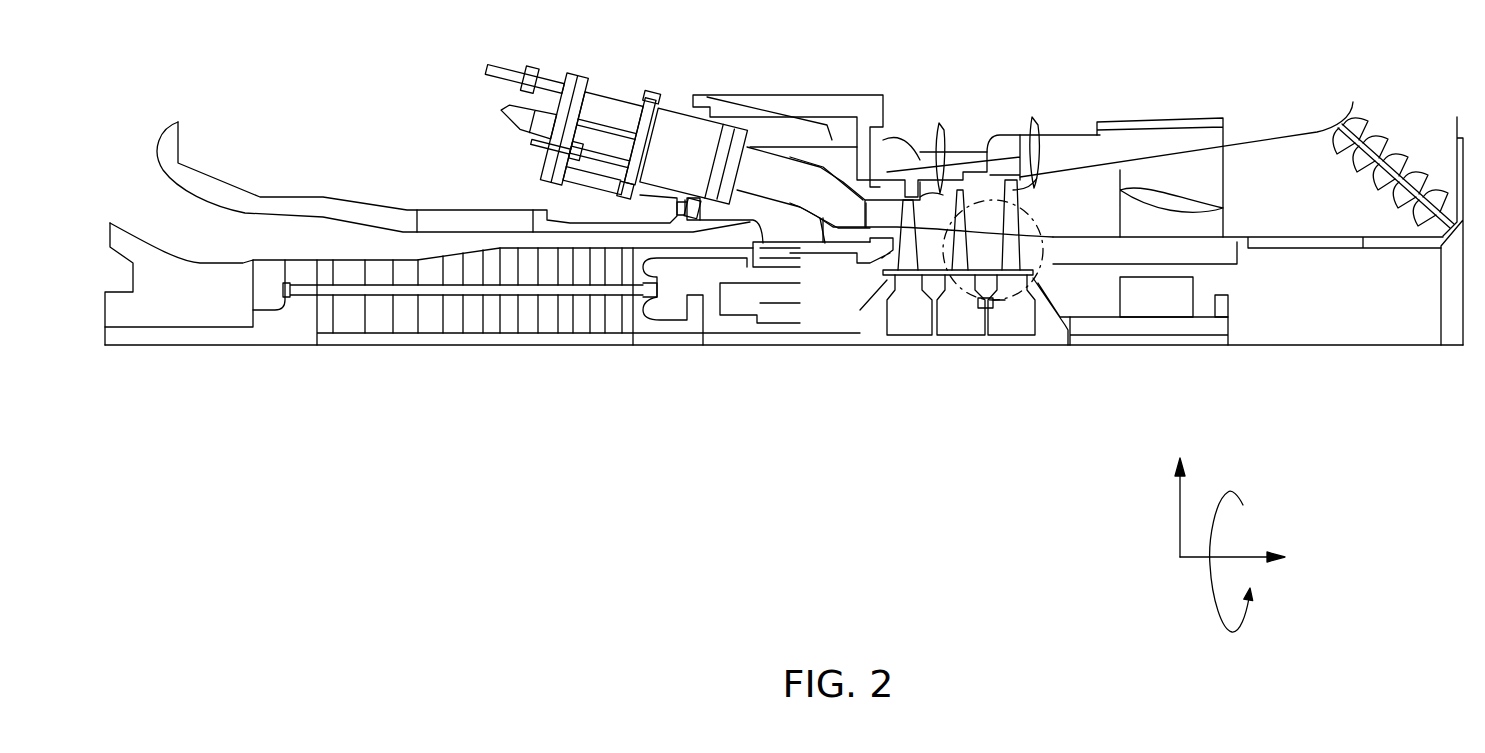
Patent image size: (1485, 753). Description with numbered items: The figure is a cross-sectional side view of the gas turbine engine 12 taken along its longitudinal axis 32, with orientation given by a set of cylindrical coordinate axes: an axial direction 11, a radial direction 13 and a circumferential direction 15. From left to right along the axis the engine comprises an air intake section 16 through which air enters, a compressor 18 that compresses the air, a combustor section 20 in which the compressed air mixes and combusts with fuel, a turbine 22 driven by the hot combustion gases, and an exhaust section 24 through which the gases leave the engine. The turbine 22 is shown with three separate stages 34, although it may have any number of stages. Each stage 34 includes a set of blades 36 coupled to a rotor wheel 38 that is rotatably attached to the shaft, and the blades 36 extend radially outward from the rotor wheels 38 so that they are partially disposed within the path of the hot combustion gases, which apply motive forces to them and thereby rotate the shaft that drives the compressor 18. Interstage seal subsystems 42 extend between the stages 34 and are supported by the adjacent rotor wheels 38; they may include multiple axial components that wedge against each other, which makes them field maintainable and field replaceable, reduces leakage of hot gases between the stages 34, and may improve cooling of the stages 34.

The axial direction 11 is at (1250, 557).
The gas turbine engine 12 is at (644, 392).
The radial direction 13 is at (1180, 517).
The circumferential direction 15 is at (1215, 607).
The air intake section 16 is at (183, 225).
The compressor 18 is at (590, 205).
The combustor section 20 is at (517, 58).
The turbine 22 is at (1002, 87).
The exhaust section 24 is at (1457, 86).
The longitudinal axis 32 is at (1333, 347).
The stages 34 is at (988, 413).
The blades 36 is at (984, 140).
The rotor wheel 38 is at (1017, 367).
The interstage seal subsystem 42 is at (985, 256).